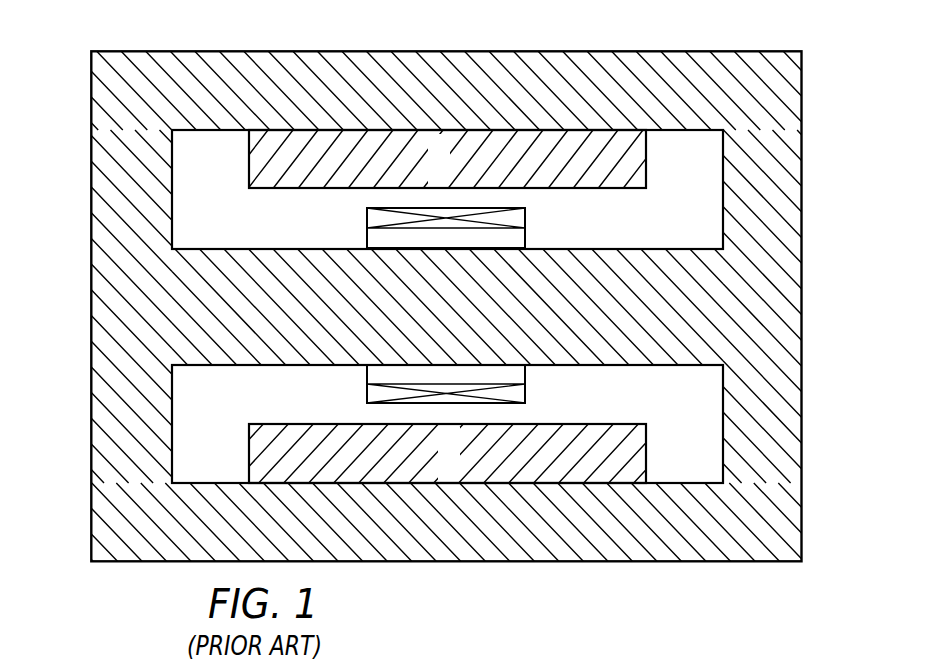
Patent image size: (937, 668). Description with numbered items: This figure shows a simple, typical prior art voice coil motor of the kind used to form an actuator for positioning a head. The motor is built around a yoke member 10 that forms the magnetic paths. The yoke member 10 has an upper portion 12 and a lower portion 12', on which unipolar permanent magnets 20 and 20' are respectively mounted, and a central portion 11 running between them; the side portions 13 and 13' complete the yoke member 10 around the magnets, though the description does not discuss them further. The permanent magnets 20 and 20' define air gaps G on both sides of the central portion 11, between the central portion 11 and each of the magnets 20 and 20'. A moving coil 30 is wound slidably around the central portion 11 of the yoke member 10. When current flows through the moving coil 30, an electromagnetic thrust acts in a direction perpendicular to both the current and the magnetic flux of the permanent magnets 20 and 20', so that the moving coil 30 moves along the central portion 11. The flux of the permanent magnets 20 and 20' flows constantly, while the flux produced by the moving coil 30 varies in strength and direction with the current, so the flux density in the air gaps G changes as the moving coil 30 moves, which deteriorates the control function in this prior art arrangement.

The yoke member 10 is at (88, 396).
The central portion 11 is at (687, 262).
The upper portion 12 is at (446, 72).
The lower portion 12' is at (446, 546).
The left side yoke portion 13 is at (229, 399).
The right side yoke portion 13' is at (800, 306).
The unipolar permanent magnet 20 is at (523, 189).
The unipolar permanent magnet 20' is at (524, 413).
The moving coil 30 is at (499, 212).
The air gap G is at (617, 200).